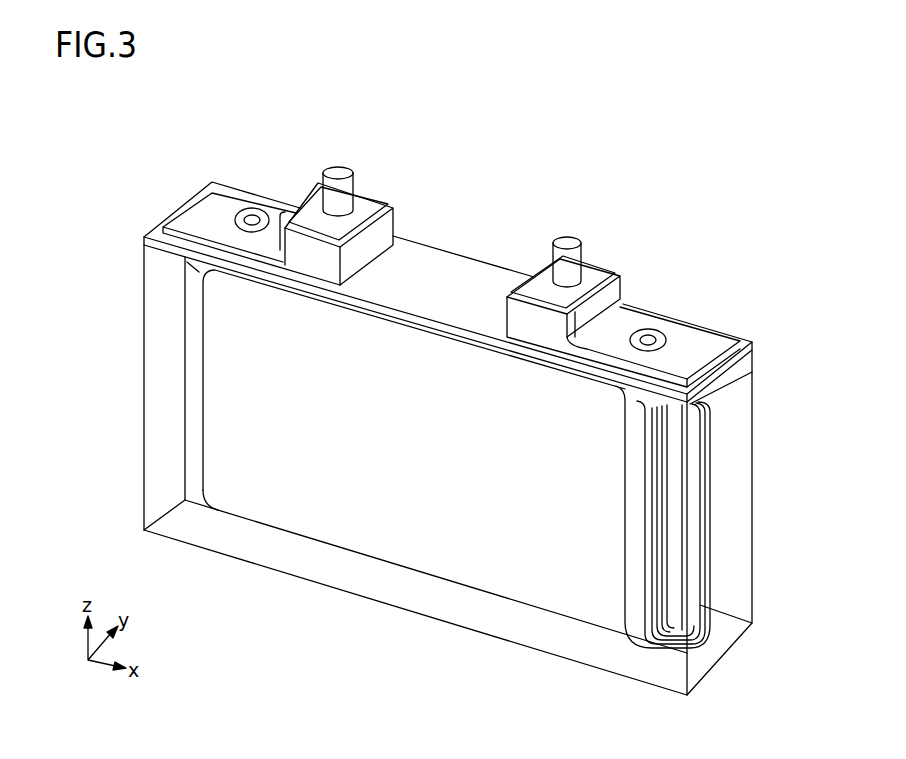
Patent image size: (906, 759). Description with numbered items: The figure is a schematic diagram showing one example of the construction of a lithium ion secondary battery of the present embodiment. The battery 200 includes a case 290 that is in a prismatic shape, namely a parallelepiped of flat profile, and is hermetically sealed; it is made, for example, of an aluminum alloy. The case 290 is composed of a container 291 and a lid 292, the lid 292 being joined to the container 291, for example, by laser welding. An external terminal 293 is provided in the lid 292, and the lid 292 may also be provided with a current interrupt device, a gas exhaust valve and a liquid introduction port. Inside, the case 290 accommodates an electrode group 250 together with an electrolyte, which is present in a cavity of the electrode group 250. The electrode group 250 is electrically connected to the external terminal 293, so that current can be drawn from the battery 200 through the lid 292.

The battery 200 is at (496, 126).
The electrode group 250 is at (377, 452).
The case 290 is at (816, 304).
The container 291 is at (755, 397).
The lid 292 is at (755, 344).
The external terminal 293 is at (338, 170).